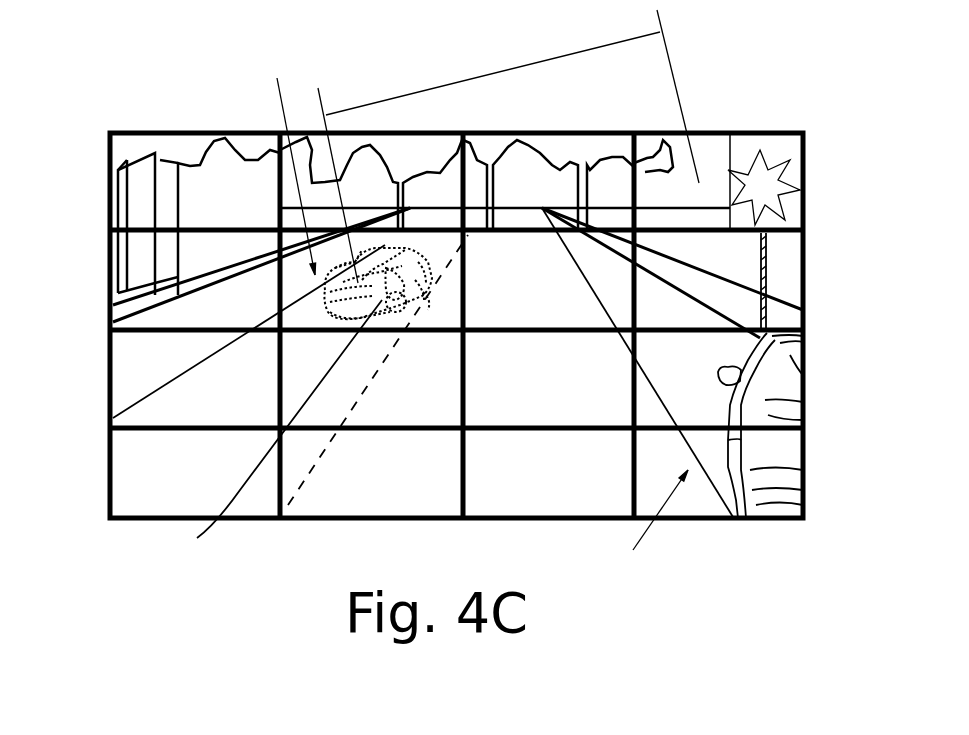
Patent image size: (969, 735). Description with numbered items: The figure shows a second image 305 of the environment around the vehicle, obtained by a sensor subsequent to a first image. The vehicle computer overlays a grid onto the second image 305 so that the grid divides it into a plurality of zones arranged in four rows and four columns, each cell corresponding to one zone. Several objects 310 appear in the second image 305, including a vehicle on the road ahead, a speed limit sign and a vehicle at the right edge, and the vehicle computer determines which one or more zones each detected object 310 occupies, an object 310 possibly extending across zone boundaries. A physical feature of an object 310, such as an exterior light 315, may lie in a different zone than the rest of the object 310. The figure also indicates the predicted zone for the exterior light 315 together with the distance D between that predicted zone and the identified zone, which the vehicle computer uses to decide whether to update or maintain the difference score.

The second image 305 is at (240, 130).
The object 310 is at (806, 133).
The exterior light 315 is at (263, 440).